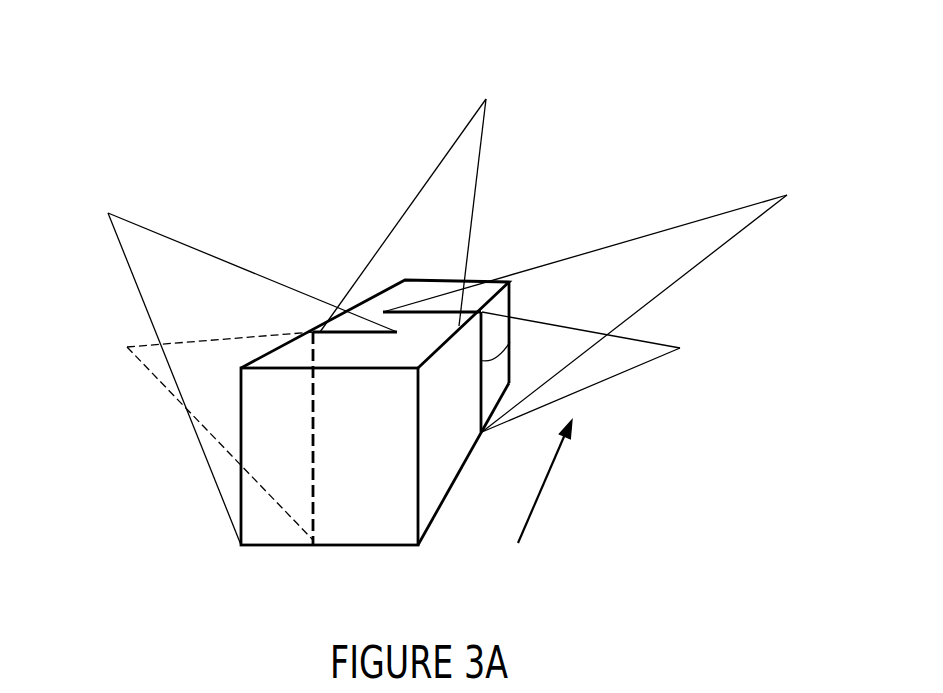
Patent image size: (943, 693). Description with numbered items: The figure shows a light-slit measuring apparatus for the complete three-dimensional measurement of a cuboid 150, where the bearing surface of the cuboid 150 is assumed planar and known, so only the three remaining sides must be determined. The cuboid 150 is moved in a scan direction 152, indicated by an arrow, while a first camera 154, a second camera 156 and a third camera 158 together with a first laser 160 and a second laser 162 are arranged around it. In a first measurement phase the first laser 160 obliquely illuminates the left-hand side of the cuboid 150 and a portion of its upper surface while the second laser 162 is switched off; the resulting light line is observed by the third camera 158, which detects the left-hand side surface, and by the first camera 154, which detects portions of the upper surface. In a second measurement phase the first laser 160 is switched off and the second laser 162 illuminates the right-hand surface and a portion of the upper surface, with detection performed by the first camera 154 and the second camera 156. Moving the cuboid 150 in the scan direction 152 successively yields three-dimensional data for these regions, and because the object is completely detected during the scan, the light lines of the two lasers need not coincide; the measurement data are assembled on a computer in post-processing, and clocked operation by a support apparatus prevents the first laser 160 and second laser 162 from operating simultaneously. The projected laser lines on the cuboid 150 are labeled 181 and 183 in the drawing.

The cuboid 150 is at (365, 547).
The scan direction 152 is at (630, 470).
The first camera 154 is at (477, 68).
The second camera 156 is at (717, 312).
The third camera 158 is at (83, 342).
The first laser 160 is at (97, 182).
The second laser 162 is at (775, 163).
The first laser line projected on object 181 is at (333, 332).
The second laser line projected on object 183 is at (512, 342).